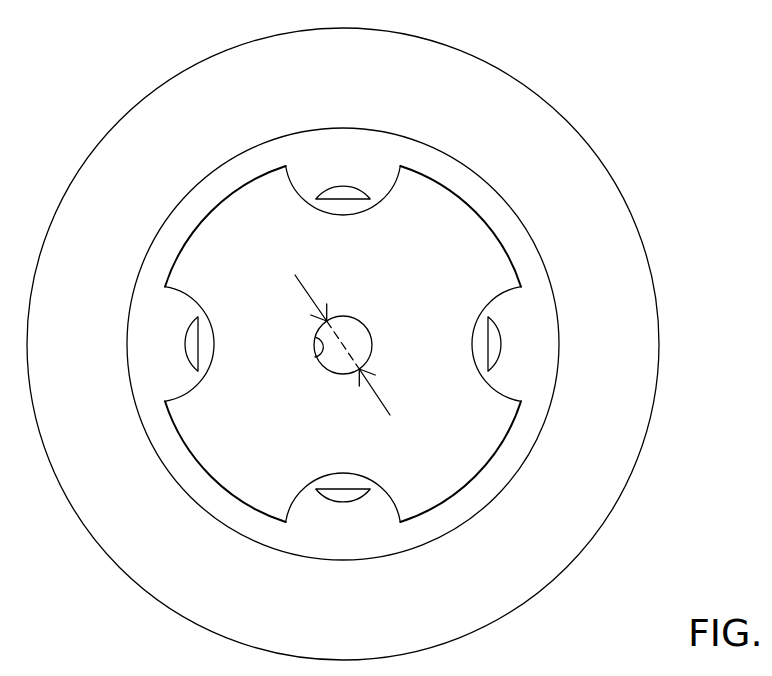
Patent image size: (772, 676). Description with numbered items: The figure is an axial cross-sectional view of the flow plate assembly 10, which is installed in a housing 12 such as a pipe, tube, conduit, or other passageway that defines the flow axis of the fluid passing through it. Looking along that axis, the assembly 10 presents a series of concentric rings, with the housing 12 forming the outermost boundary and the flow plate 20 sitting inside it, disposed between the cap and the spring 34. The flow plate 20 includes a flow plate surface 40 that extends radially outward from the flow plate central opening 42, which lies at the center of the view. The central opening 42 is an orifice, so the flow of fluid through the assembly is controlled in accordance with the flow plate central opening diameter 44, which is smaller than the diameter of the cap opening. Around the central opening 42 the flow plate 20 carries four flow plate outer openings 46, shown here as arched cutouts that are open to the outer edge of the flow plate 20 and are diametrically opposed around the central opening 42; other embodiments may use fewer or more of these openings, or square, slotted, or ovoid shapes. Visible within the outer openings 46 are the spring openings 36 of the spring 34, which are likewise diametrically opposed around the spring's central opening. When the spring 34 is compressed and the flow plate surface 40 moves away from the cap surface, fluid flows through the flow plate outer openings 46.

The flow plate assembly 10 is at (640, 70).
The housing 12 is at (643, 446).
The flow plate 20 is at (470, 248).
The spring 34 is at (367, 178).
The spring openings 36 is at (338, 187).
The flow plate surface 40 is at (245, 232).
The flow plate central opening 42 is at (320, 358).
The flow plate central opening diameter 44 is at (378, 400).
The flow plate outer openings 46 is at (296, 186).